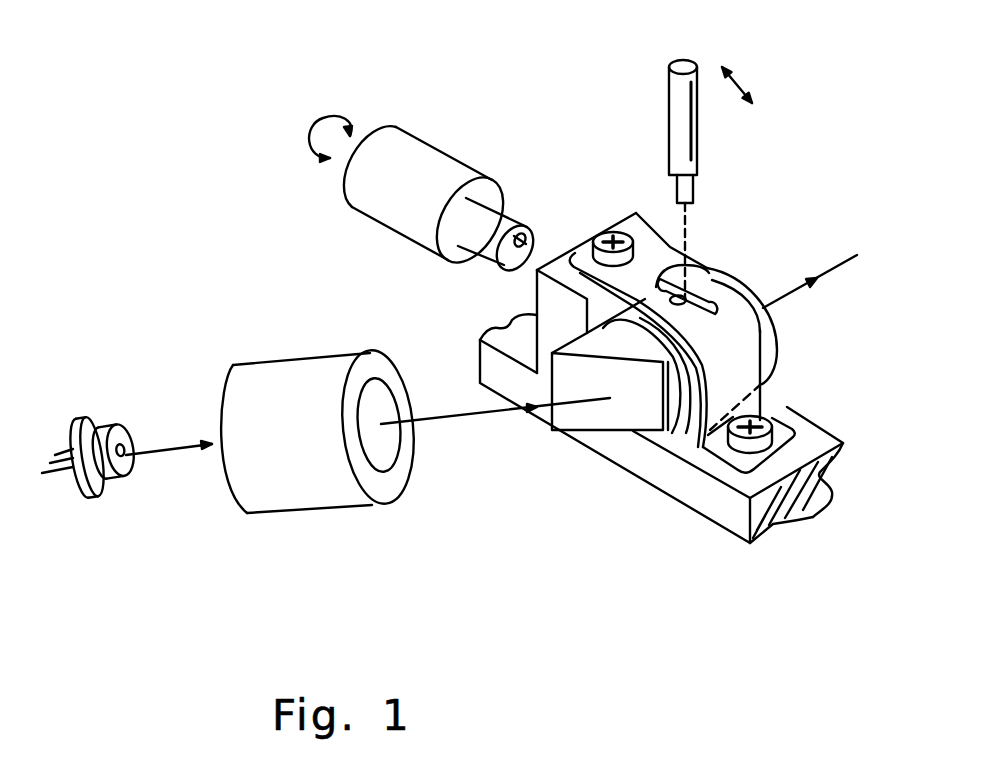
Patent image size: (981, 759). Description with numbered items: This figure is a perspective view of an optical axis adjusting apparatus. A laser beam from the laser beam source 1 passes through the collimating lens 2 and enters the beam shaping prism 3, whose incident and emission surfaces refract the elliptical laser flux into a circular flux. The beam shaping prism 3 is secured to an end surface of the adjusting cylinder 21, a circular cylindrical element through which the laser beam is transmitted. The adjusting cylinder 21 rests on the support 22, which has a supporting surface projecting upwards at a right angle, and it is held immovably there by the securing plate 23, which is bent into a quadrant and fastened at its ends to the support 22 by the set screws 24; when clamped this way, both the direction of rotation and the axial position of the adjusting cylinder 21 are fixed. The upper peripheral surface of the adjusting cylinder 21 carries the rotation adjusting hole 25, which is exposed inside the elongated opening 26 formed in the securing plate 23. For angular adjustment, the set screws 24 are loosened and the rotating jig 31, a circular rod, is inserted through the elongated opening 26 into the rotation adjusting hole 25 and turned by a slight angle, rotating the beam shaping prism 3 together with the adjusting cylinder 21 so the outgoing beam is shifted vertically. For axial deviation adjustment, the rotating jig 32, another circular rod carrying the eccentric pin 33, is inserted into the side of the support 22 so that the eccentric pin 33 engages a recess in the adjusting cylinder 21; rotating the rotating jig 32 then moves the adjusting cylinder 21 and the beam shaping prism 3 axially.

The laser beam source 1 is at (100, 492).
The collimating lens 2 is at (311, 497).
The beam shaping prism 3 is at (602, 418).
The adjusting cylinder 21 is at (763, 337).
The support 22 is at (675, 493).
The securing plate 23 is at (730, 313).
The set screws 24 is at (603, 250).
The rotation adjusting hole 25 is at (716, 272).
The elongated opening 26 is at (692, 265).
The rotating jig 31 is at (692, 63).
The rotating jig (tool) 32 is at (388, 140).
The eccentric pin 33 is at (518, 232).